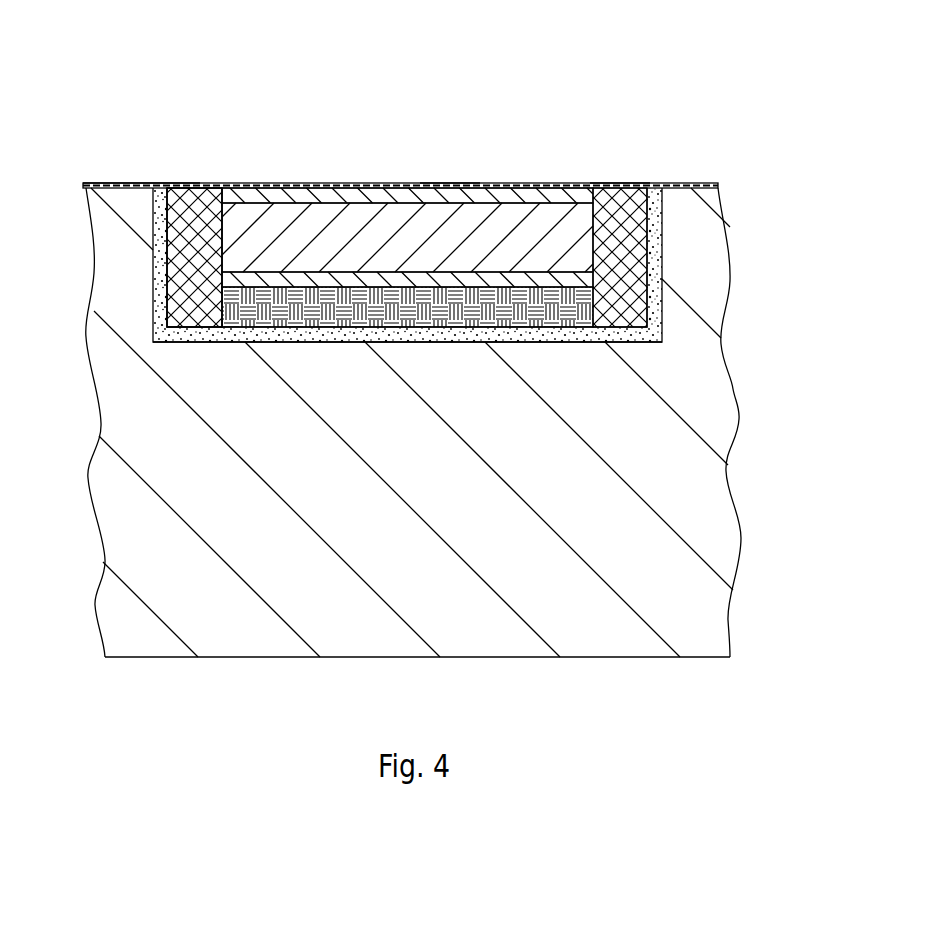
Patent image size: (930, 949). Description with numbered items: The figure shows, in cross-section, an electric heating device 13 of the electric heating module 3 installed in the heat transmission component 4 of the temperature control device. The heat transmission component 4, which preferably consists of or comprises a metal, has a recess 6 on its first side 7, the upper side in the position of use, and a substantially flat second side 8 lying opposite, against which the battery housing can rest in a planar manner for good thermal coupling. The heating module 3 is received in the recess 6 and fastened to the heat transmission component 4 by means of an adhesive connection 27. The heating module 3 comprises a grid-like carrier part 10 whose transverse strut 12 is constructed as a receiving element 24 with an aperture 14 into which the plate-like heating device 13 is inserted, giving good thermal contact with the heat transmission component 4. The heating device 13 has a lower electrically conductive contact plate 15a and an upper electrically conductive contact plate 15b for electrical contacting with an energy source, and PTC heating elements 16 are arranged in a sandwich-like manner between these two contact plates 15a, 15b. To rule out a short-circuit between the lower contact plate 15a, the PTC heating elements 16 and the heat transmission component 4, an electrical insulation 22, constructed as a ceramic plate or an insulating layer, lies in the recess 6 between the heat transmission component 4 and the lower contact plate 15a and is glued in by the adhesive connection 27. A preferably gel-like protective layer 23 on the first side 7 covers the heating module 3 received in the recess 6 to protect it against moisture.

The electric heating module 3 is at (530, 157).
The heat transmission component 4 is at (703, 392).
The recess 6 is at (640, 200).
The first side 7 is at (128, 186).
The second side 8 is at (132, 657).
The carrier part 10 is at (617, 184).
The transverse strut 12 is at (193, 189).
The electric heating device 13 is at (449, 184).
The aperture 14 is at (592, 222).
The lower electrically conductive contact plate 15a is at (393, 277).
The upper electrically conductive contact plate 15b is at (285, 193).
The PTC heating element 16 is at (347, 215).
The electrical insulation 22 is at (350, 325).
The protective layer 23 is at (100, 186).
The receiving element 24 is at (194, 257).
The adhesive connection 27 is at (527, 333).